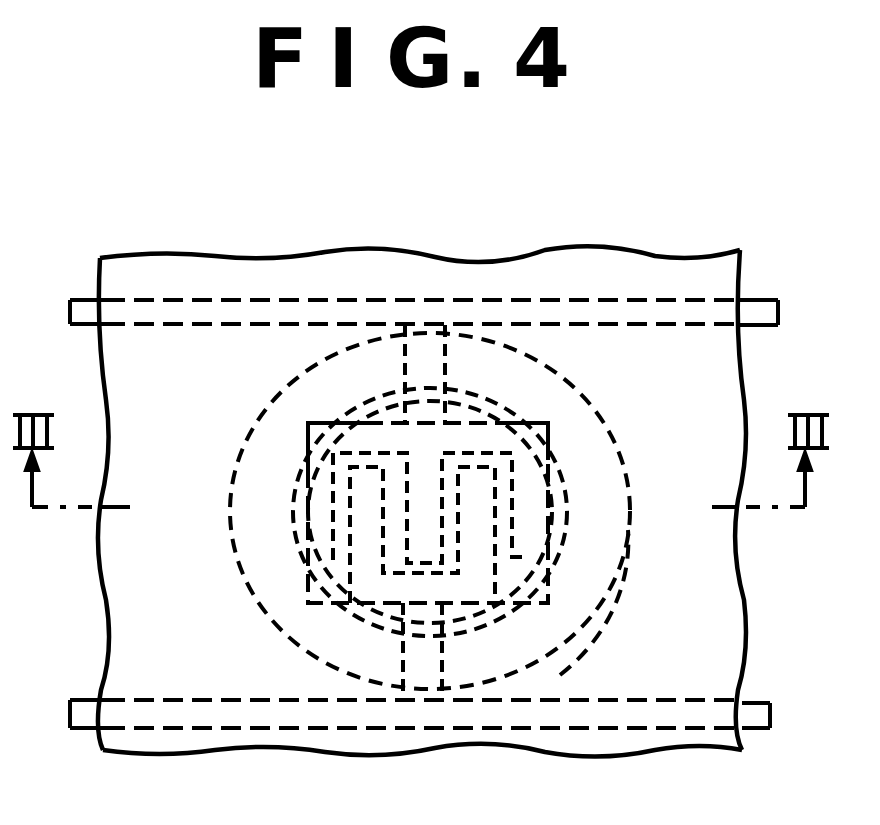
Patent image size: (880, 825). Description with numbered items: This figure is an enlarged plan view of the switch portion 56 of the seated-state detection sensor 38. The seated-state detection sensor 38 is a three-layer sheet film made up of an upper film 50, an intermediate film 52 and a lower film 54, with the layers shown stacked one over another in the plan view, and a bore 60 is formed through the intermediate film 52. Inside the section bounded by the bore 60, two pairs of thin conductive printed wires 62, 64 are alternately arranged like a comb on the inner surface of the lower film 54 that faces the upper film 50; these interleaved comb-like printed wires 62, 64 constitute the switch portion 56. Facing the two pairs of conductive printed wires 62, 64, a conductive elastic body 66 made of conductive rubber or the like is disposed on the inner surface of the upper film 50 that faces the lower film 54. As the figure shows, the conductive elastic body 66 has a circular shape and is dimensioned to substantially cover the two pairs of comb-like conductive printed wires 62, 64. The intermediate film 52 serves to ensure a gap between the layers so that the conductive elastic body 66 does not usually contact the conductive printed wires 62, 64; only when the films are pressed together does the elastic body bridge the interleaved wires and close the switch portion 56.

The seated-state detection sensor 38 is at (347, 258).
The upper film 50 is at (592, 282).
The intermediate film 52 is at (730, 647).
The lower film 54 is at (598, 612).
The switch portion 56 is at (312, 513).
The bore 60 is at (630, 556).
The conductive printed wire 62 is at (375, 432).
The conductive printed wire 64 is at (372, 608).
The conductive elastic body 66 is at (563, 494).